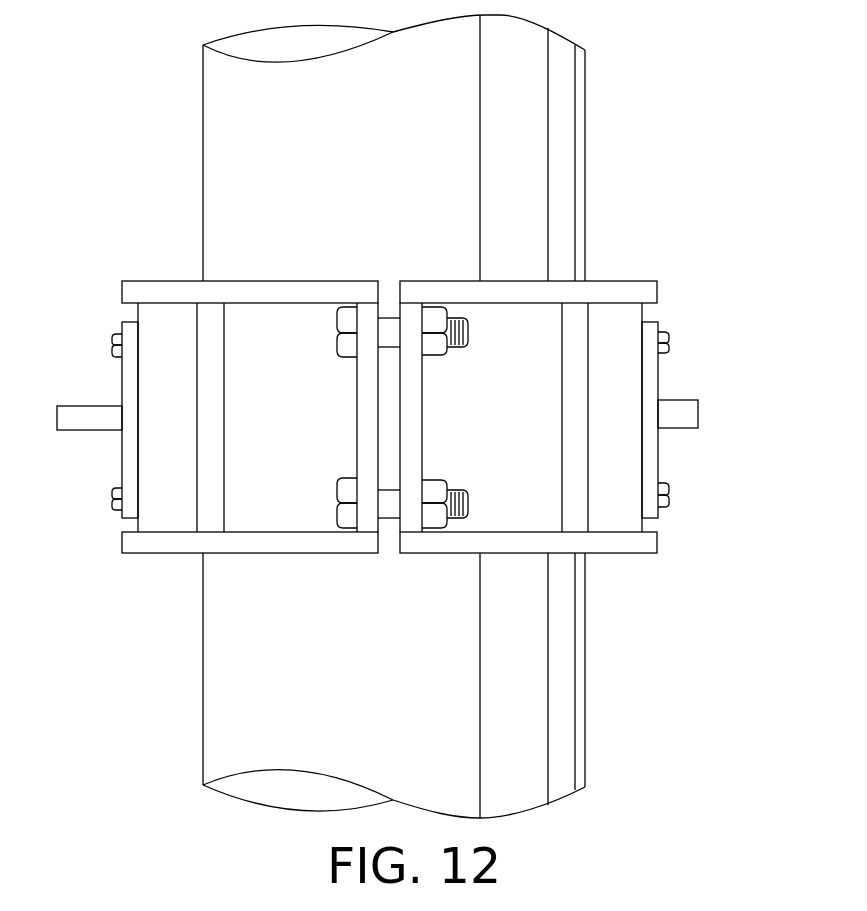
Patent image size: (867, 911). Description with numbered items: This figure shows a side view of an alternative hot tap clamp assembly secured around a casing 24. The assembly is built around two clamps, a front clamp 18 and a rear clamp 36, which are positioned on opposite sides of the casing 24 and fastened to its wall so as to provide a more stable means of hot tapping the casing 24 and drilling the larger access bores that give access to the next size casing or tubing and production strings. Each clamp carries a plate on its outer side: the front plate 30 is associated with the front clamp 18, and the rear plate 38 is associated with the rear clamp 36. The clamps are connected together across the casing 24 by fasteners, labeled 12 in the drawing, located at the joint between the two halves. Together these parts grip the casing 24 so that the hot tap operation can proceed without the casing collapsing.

The casing 24 is at (585, 143).
The front clamp 18 is at (185, 292).
The rear clamp 36 is at (607, 290).
The front plate 30 is at (120, 378).
The rear plate 38 is at (660, 382).
The bolt 12 is at (430, 343).